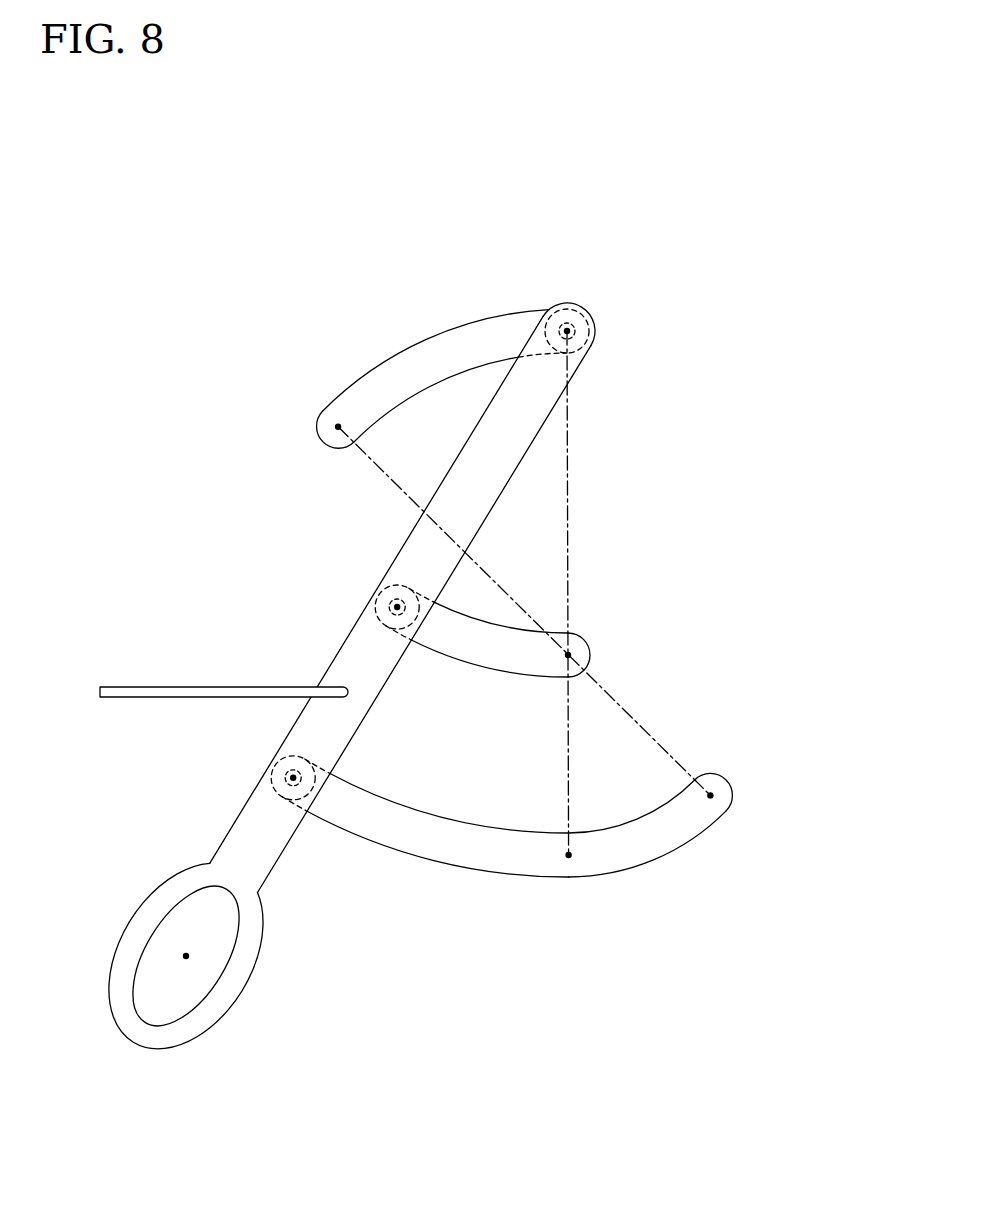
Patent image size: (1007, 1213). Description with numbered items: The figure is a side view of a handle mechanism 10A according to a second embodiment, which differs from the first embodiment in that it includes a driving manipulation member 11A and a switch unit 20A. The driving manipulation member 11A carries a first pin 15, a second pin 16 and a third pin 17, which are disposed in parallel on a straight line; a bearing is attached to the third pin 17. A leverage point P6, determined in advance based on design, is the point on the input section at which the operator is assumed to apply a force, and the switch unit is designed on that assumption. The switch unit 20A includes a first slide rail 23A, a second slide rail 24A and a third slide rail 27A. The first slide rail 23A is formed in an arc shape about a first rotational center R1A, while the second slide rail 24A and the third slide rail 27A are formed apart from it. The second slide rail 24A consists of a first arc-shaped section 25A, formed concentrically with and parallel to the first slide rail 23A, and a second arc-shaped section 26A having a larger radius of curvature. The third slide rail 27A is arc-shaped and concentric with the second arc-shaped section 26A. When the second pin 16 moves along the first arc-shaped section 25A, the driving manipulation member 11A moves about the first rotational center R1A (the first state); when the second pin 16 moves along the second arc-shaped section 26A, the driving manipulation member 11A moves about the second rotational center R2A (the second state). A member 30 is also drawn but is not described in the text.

The handle mechanism 10A is at (658, 228).
The driving manipulation member 11A is at (277, 842).
The first pin 15 is at (393, 609).
The second pin 16 is at (289, 778).
The third pin 17 is at (575, 367).
The switch unit 20A is at (617, 507).
The first slide rail 23A is at (470, 653).
The second slide rail 24A is at (507, 889).
The first arc-shaped section 25A is at (447, 855).
The second arc-shaped section 26A is at (651, 873).
The third slide rail 27A is at (428, 347).
The rod 30 is at (184, 687).
The leverage point P6 is at (190, 956).
The first rotational center R1A is at (575, 331).
The second rotational center R2A is at (572, 655).